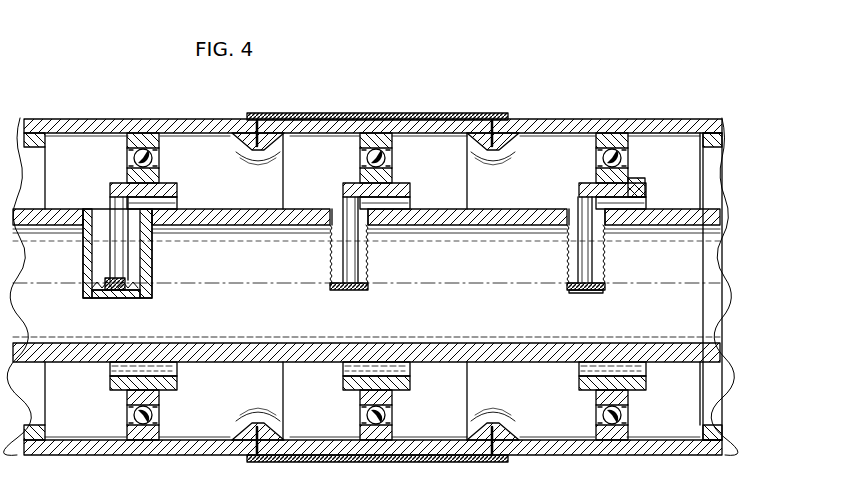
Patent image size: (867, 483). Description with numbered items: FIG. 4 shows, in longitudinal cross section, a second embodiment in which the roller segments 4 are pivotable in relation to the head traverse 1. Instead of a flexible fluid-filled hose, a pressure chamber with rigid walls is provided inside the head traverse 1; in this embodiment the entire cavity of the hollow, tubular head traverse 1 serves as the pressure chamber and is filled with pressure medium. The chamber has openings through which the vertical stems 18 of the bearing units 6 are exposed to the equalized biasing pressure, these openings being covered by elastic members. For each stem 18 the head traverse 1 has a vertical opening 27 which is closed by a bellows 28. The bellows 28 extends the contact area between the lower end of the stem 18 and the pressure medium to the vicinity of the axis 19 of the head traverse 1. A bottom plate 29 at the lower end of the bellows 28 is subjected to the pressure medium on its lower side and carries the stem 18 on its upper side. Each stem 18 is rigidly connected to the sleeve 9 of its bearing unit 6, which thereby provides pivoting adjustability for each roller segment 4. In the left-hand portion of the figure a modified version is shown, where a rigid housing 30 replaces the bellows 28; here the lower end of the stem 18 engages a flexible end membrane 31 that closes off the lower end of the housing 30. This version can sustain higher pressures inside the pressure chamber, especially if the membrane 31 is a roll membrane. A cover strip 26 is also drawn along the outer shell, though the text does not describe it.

The head traverse 1 is at (430, 345).
The roller segment 4 is at (108, 120).
The bearing unit 6 is at (112, 154).
The sleeve 9 is at (637, 186).
The vertical stem 18 is at (110, 253).
The axis of the head traverse 19 is at (520, 288).
The cover strip 26 is at (268, 116).
The vertical opening 27 is at (152, 238).
The bellows 28 is at (605, 268).
The bottom plate 29 is at (593, 293).
The rigid housing 30 is at (150, 268).
The flexible end membrane 31 is at (117, 292).